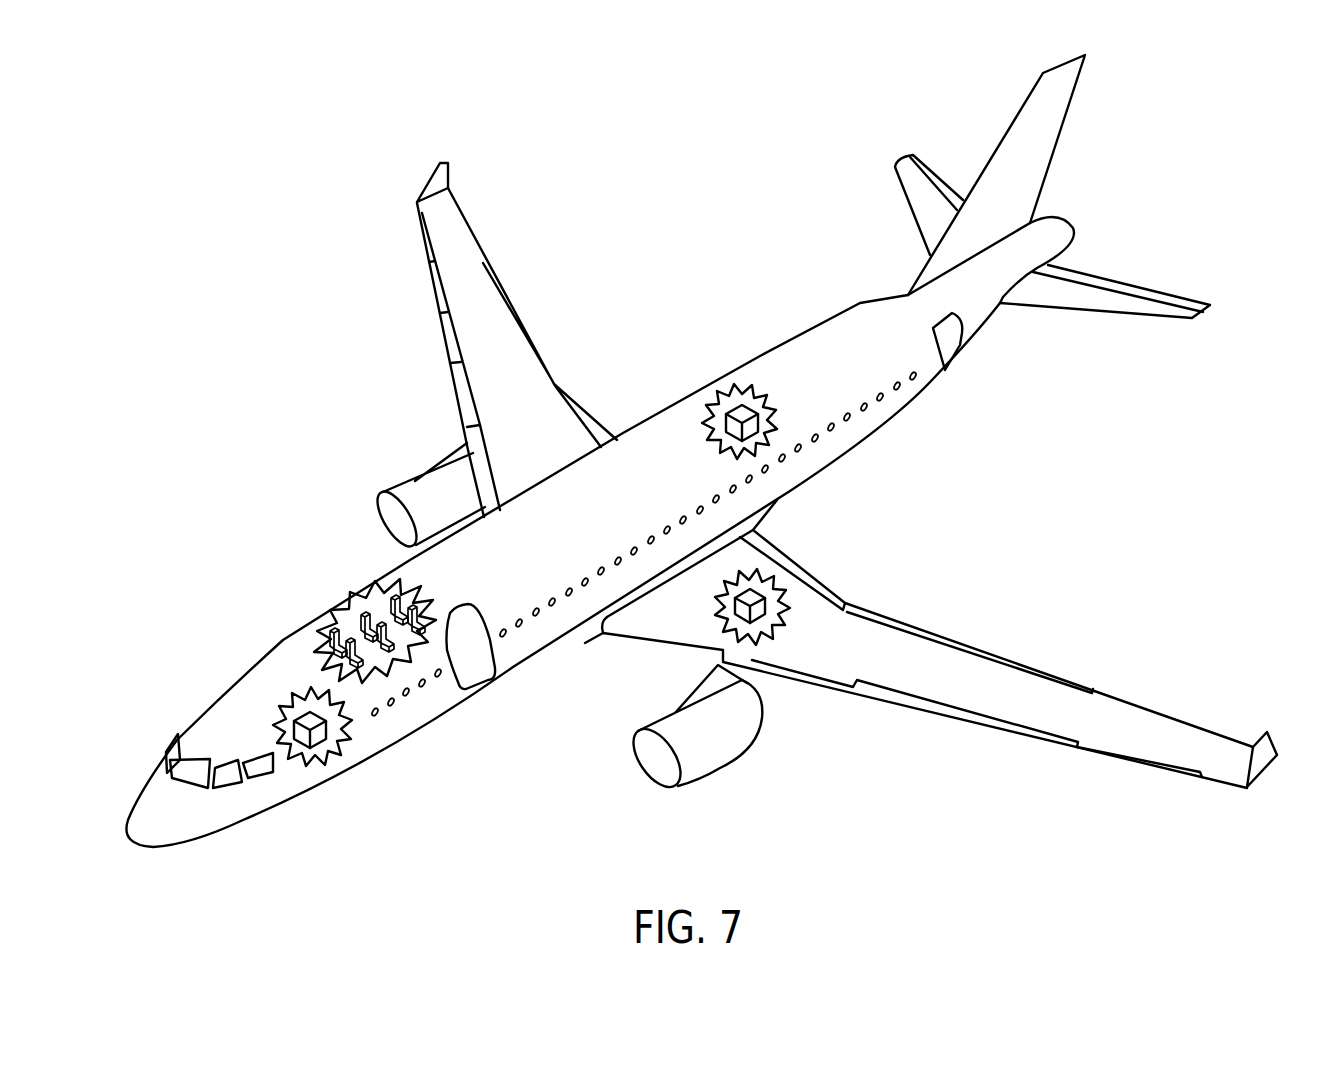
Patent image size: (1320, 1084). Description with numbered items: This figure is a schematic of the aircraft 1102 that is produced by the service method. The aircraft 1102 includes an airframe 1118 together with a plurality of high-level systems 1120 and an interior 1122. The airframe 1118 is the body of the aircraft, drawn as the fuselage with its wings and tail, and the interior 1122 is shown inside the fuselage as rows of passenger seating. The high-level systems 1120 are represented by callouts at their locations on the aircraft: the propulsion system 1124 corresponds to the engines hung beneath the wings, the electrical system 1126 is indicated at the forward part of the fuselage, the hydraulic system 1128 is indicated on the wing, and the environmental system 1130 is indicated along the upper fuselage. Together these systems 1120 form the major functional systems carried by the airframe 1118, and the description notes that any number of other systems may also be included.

The aircraft 1102 is at (245, 400).
The airframe 1118 is at (366, 574).
The high-level systems 1120 is at (1020, 555).
The interior 1122 is at (333, 642).
The propulsion system 1124 is at (404, 483).
The electrical system 1126 is at (310, 720).
The hydraulic system 1128 is at (758, 612).
The environmental system 1130 is at (738, 410).